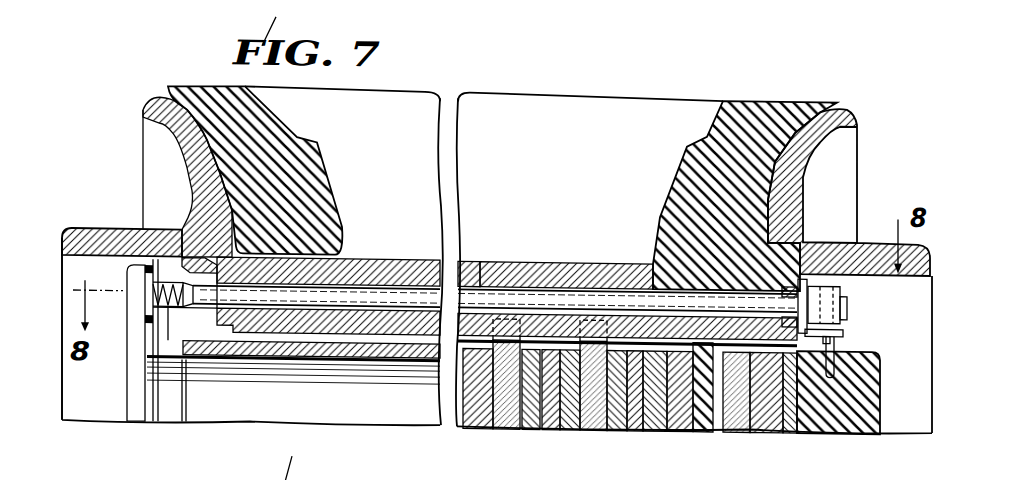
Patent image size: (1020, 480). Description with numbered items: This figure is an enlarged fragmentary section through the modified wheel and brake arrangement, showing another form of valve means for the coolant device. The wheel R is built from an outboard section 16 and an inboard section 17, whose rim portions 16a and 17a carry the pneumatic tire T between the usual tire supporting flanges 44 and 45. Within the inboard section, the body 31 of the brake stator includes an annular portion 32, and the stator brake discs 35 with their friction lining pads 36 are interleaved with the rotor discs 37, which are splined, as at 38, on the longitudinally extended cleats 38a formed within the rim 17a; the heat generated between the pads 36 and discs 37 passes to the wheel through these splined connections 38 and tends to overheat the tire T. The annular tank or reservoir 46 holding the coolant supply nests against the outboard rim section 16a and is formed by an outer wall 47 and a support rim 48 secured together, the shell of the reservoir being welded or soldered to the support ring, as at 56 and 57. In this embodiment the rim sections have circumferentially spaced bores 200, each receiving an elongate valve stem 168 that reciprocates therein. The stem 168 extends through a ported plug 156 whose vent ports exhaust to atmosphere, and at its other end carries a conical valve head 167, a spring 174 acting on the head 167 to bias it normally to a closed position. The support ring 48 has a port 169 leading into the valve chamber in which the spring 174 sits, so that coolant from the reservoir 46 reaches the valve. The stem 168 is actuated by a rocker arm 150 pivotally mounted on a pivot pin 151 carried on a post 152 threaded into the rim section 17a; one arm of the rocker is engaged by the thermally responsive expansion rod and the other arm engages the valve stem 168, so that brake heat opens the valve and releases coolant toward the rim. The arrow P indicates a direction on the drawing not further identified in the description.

The outboard section 16 is at (358, 246).
The outboard rim section 16a is at (367, 273).
The inboard section 17 is at (627, 251).
The inboard rim section 17a is at (487, 273).
The valve stem 168 is at (456, 262).
The bore 200 is at (547, 285).
The tire supporting flange 44 is at (827, 148).
The tire supporting flange 45 is at (173, 125).
The support rim 48 is at (137, 231).
The conical valve head 167 is at (183, 238).
The spring 174 is at (153, 300).
The tank or reservoir 46 is at (122, 362).
The outer wall 47 is at (127, 401).
The port 169 is at (160, 351).
The weld or solder joint 56 is at (180, 361).
The weld or solder joint 57 is at (237, 342).
The cleats 38a is at (477, 321).
The annular portion 32 is at (477, 406).
The stator brake discs 35 is at (547, 412).
The friction lining pads 36 is at (613, 414).
The rotor discs 37 is at (680, 407).
The splined connection 38 is at (737, 403).
The ported plug 156 is at (800, 416).
The body of the brake stator 31 is at (858, 404).
The pivot pin 151 is at (828, 340).
The rocker arm 150 is at (840, 320).
The post 152 is at (840, 298).
The pneumatic tire T is at (197, 88).
The wheel R is at (866, 106).
The direction P is at (780, 433).